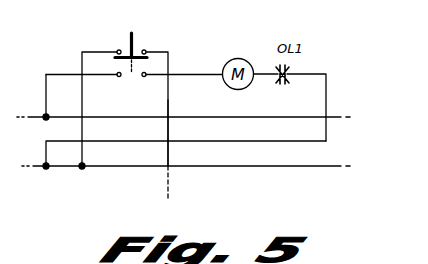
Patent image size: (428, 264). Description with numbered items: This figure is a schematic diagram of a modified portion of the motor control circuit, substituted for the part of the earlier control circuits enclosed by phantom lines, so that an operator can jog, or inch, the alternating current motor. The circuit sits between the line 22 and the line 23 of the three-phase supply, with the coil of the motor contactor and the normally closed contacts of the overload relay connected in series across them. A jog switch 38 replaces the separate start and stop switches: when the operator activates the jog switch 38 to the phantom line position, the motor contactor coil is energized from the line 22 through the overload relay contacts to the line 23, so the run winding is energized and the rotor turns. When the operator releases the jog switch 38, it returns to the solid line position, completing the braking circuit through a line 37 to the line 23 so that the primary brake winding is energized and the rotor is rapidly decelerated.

The jog switch 38 is at (144, 39).
The line 22 is at (37, 115).
The line 23 is at (34, 168).
The line 37 is at (170, 170).